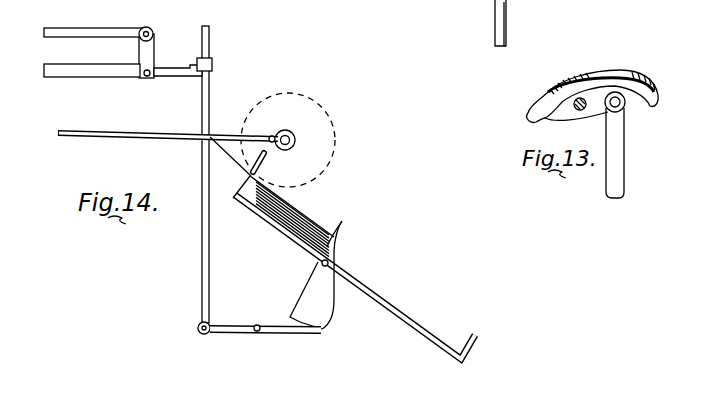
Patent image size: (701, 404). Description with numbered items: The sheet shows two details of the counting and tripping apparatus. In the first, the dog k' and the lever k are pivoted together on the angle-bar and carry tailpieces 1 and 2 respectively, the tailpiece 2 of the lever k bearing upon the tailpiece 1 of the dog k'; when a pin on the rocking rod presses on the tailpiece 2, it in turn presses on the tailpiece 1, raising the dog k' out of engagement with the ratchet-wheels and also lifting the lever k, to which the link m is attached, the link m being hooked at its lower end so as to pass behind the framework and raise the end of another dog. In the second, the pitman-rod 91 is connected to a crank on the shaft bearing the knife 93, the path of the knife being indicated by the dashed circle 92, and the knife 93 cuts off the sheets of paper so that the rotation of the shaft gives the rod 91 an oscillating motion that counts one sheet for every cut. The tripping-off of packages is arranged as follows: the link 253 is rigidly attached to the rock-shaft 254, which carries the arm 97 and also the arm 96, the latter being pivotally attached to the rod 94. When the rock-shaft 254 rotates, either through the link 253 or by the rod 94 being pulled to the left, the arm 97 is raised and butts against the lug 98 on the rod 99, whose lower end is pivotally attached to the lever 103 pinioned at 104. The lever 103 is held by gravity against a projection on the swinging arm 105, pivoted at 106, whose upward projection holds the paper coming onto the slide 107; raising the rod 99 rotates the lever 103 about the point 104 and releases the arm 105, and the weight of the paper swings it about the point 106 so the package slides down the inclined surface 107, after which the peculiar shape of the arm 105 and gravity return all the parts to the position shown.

In FIG. 14, the pitman-rod 91 is at (85, 139).
In FIG. 14, the disk (dashed circle) 92 is at (328, 123).
In FIG. 14, the knife 93 is at (259, 167).
In FIG. 14, the rod 94 is at (95, 30).
In FIG. 14, the arm 96 is at (153, 58).
In FIG. 14, the arm 97 is at (172, 72).
In FIG. 14, the lug 98 is at (213, 63).
In FIG. 14, the rod 99 is at (206, 223).
In FIG. 14, the lever 103 is at (238, 320).
In FIG. 14, the pivot point 104 is at (257, 332).
In FIG. 14, the swinging arm 105 is at (318, 272).
In FIG. 14, the pivot point 106 is at (330, 263).
In FIG. 14, the slide 107 is at (388, 304).
In FIG. 14, the link 253 is at (65, 76).
In FIG. 14, the rock-shaft 254 is at (147, 78).
In FIG. 13, the tailpiece 1 is at (528, 118).
In FIG. 13, the tailpiece 2 is at (523, 107).
In FIG. 13, the lever k is at (592, 106).
In FIG. 13, the dog k' is at (601, 72).
In FIG. 13, the link m is at (623, 140).